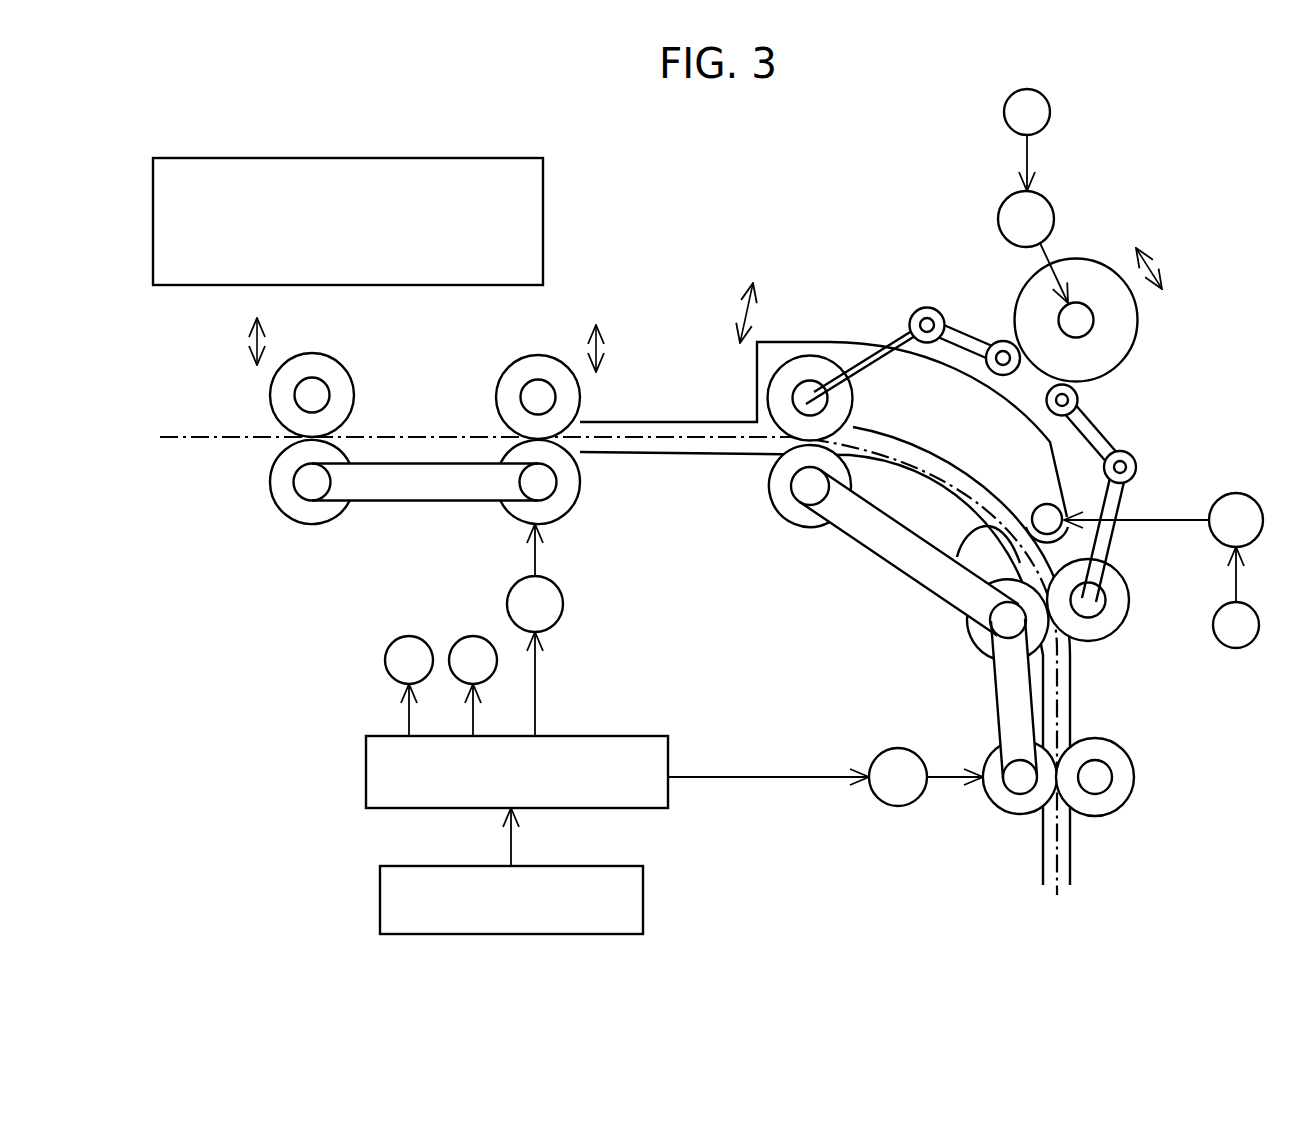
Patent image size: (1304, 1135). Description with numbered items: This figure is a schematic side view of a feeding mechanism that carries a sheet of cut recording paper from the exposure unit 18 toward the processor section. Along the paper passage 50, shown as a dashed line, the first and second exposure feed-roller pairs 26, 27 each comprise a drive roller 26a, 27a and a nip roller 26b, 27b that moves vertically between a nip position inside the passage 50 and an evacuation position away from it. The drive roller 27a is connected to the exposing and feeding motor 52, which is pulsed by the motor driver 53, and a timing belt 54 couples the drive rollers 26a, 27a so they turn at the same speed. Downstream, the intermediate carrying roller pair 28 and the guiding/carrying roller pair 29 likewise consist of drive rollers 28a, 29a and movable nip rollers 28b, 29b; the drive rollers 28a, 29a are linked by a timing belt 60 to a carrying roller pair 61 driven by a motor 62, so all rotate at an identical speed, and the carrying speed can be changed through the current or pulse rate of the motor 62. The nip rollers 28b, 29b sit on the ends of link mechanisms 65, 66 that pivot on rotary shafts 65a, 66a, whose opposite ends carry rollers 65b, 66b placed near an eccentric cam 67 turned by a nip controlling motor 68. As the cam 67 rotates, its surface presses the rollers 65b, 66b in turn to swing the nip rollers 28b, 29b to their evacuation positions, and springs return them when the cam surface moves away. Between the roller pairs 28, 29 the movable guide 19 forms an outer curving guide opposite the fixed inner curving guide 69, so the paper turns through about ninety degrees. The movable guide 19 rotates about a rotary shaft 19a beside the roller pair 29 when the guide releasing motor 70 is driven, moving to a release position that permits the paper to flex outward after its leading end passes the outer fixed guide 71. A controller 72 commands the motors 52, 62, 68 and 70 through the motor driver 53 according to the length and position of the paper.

The exposure unit 18 is at (543, 190).
The movable guide 19 is at (825, 584).
The rotary shaft 19a is at (957, 557).
The first exposure feed-roller pair 26 is at (374, 462).
The drive roller 26a is at (298, 505).
The nip roller 26b is at (275, 400).
The second exposure feed-roller pair 27 is at (544, 461).
The drive roller 27a is at (520, 518).
The nip roller 27b is at (513, 380).
The intermediate carrying roller pair 28 is at (787, 459).
The drive roller 28a is at (808, 525).
The nip roller 28b is at (806, 372).
The guiding/carrying roller pair 29 is at (1062, 641).
The drive roller 29a is at (978, 648).
The nip roller 29b is at (1105, 640).
The passage 50 is at (386, 433).
The motor 52 is at (563, 605).
The motor driver 53 is at (366, 778).
The timing belt 54 is at (390, 503).
The timing belt 60 is at (995, 705).
The carrying roller pair 61 is at (1005, 805).
The motor 62 is at (900, 806).
The link mechanism 65 is at (913, 299).
The rotary shaft 65a is at (925, 307).
The roller 65b is at (1003, 340).
The link mechanism 66 is at (1145, 473).
The rotary shaft 66a is at (1137, 467).
The roller 66b is at (1078, 397).
The eccentric cam 67 is at (1100, 265).
The nip controlling motor 68 is at (1000, 205).
The inner curving guide 69 is at (938, 490).
The guide releasing motor 70 is at (1255, 500).
The outer fixed guide 71 is at (1110, 547).
The controller 72 is at (380, 905).